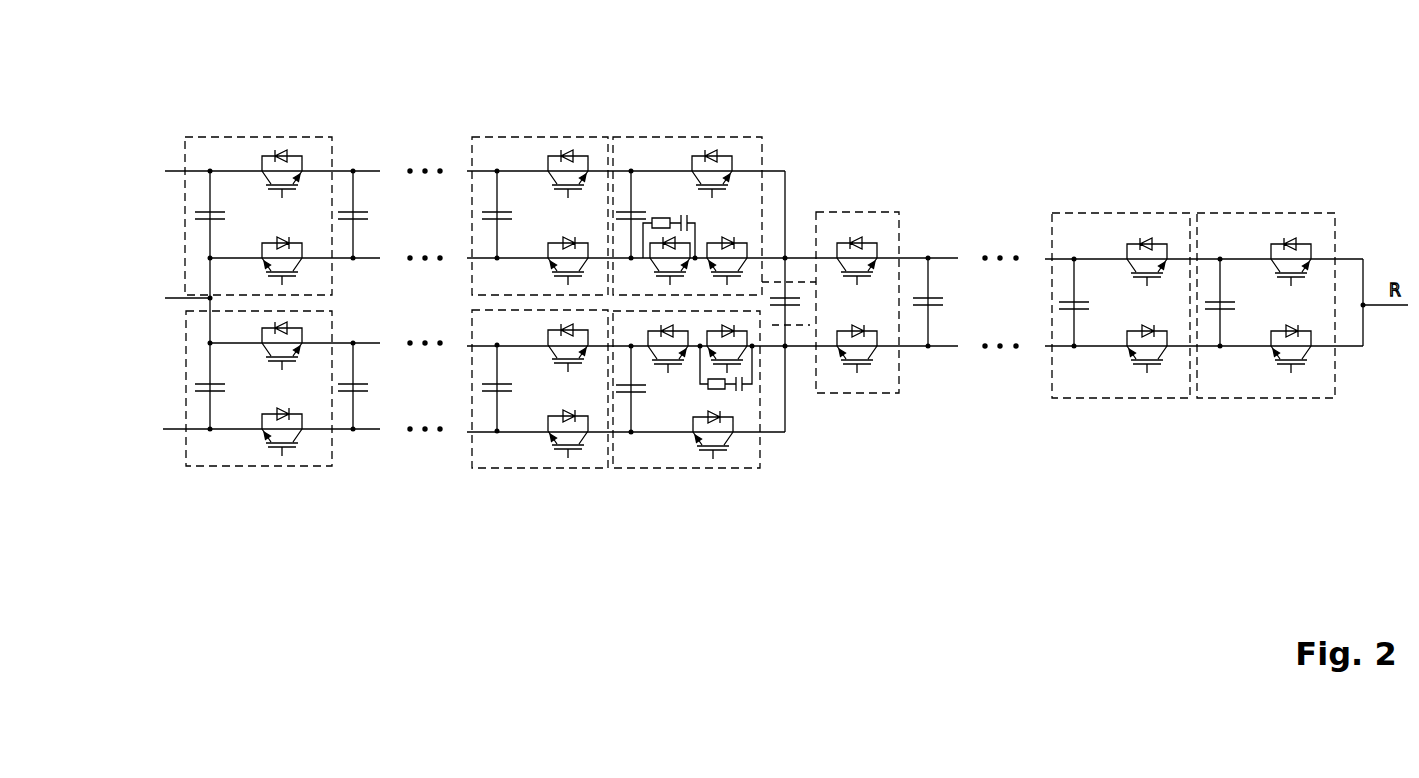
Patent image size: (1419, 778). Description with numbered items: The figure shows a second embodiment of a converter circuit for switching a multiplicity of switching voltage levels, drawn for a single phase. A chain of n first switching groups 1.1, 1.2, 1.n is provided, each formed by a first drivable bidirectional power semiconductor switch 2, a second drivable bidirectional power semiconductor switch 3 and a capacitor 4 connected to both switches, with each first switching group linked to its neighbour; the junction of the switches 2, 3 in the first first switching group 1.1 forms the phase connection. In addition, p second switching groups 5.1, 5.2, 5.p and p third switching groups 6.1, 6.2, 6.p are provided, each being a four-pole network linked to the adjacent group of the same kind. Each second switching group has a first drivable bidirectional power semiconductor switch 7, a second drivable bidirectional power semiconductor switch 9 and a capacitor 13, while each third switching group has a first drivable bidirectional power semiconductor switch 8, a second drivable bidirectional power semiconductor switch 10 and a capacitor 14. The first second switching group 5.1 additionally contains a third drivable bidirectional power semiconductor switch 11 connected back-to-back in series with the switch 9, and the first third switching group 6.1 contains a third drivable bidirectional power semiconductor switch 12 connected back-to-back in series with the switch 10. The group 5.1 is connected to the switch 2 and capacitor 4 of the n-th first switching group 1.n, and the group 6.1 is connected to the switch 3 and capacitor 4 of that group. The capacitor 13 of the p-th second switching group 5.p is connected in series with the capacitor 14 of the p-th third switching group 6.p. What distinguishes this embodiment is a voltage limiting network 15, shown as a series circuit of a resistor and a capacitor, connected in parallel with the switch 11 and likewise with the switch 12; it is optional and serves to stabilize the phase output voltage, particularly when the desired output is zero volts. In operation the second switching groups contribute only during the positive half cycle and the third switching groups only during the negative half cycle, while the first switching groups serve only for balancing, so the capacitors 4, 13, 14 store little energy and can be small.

The first first switching group 1.1 is at (1260, 213).
The second first switching group 1.2 is at (1118, 213).
The n-th first switching group 1.n is at (858, 212).
The first drivable bidirectional power semiconductor switch 2 is at (878, 237).
The second drivable bidirectional power semiconductor switch 3 is at (884, 374).
The capacitor 4 is at (1235, 309).
The first second switching group 5.1 is at (712, 137).
The second second switching group 5.2 is at (505, 137).
The p-th second switching group 5.p is at (317, 137).
The first third switching group 6.1 is at (723, 468).
The second third switching group 6.2 is at (483, 468).
The p-th third switching group 6.p is at (322, 467).
The first drivable bidirectional power semiconductor switch 7 is at (289, 142).
The first drivable bidirectional power semiconductor switch 8 is at (287, 455).
The second drivable bidirectional power semiconductor switch 9 is at (279, 225).
The second drivable bidirectional power semiconductor switch 10 is at (252, 360).
The third drivable bidirectional power semiconductor switch 11 is at (708, 233).
The third drivable bidirectional power semiconductor switch 12 is at (748, 370).
The capacitor 13 is at (638, 210).
The capacitor 14 is at (653, 392).
The voltage limiting network 15 is at (668, 208).